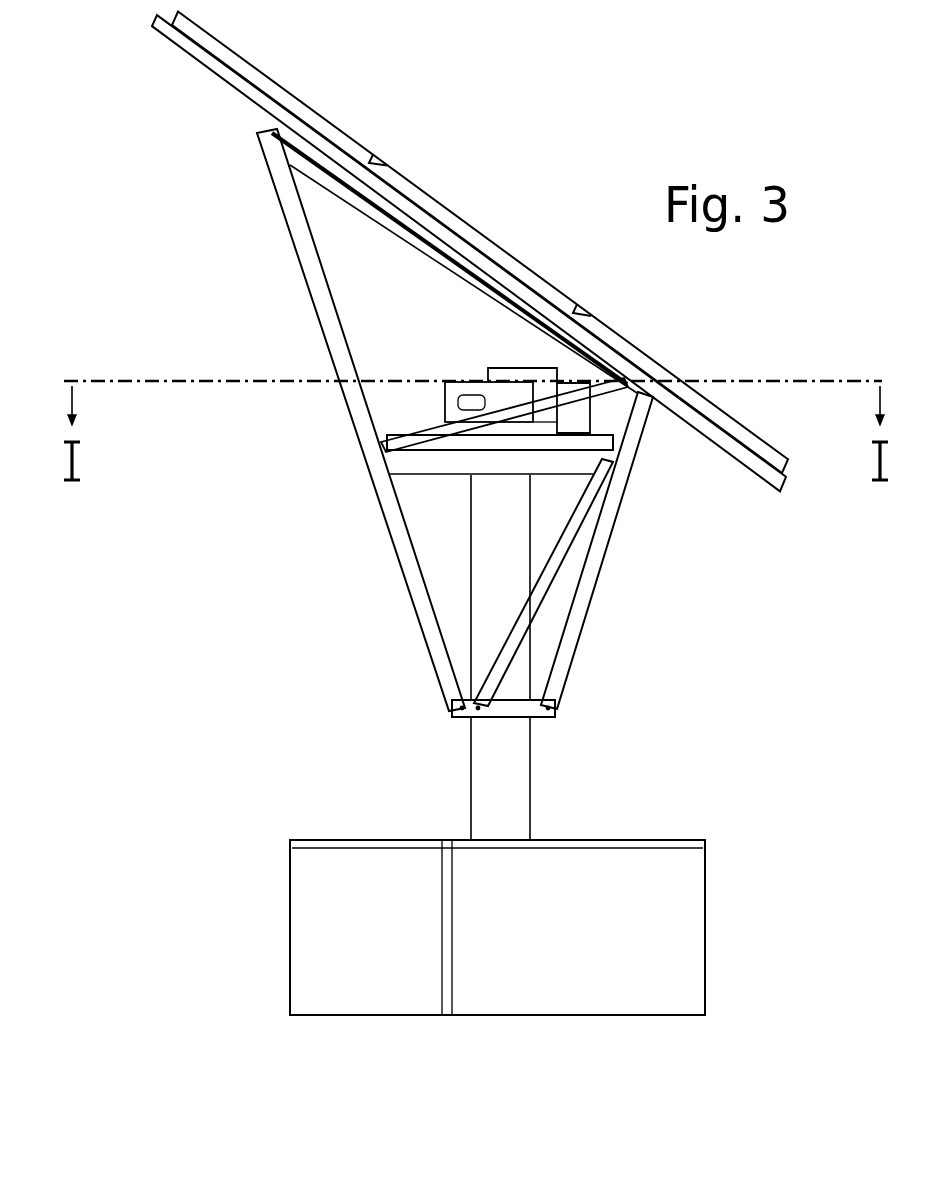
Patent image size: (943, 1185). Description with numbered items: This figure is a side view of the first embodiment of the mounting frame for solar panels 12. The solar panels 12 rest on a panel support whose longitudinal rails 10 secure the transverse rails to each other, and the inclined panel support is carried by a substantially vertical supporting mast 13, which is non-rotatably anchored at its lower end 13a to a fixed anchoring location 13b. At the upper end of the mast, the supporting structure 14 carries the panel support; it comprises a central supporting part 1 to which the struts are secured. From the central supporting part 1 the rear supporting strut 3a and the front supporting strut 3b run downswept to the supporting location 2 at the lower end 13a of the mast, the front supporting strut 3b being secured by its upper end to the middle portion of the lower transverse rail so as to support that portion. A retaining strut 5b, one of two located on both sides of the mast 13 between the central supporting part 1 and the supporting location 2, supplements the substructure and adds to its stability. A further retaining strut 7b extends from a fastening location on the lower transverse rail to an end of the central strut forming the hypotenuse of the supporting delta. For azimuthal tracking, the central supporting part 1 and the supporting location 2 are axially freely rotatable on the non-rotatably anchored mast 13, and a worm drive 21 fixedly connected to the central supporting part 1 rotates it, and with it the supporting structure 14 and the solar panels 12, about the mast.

The central supporting part 1 is at (507, 461).
The supporting location 2 is at (548, 729).
The rear supporting strut 3a is at (302, 258).
The front supporting strut 3b is at (600, 557).
The retaining strut 5b is at (590, 618).
The retaining strut 7b is at (450, 430).
The longitudinal rail 10 is at (228, 77).
The solar panel 12 is at (242, 48).
The supporting mast 13 is at (500, 587).
The lower end of the mast 13a is at (492, 765).
The fixed anchoring location 13b is at (650, 915).
The supporting structure 14 is at (300, 421).
The worm drive 21 is at (452, 369).